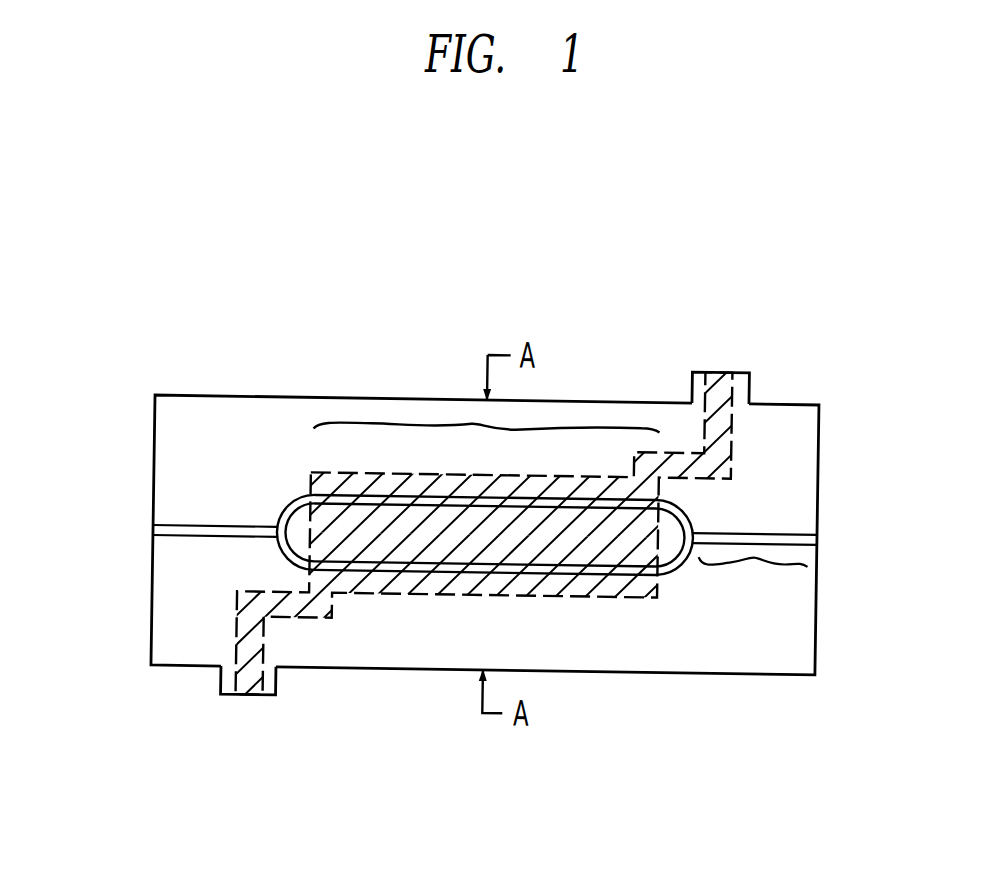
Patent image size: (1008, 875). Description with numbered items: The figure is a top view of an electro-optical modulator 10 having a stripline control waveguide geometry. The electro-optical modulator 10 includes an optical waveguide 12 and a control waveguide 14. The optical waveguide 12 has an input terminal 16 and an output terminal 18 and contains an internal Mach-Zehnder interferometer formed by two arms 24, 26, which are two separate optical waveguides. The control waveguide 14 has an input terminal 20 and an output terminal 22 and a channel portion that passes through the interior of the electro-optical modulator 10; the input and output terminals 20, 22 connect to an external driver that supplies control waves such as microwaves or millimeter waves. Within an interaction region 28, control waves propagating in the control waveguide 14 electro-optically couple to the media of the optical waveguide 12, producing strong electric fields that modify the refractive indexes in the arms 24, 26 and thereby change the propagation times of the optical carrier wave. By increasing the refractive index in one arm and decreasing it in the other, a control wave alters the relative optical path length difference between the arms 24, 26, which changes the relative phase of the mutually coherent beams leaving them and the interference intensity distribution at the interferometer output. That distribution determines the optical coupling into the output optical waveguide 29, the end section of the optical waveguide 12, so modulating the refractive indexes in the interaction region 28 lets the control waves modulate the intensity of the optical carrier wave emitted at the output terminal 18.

The electro-optical modulator 10 is at (578, 266).
The optical waveguide 12 is at (272, 498).
The control waveguide 14 is at (333, 597).
The input terminal 16 is at (138, 531).
The output terminal 18 is at (832, 531).
The input terminal 20 is at (253, 703).
The output terminal 22 is at (722, 355).
The arm 24 is at (613, 566).
The arm 26 is at (360, 492).
The interaction region 28 is at (473, 404).
The output optical waveguide 29 is at (753, 583).